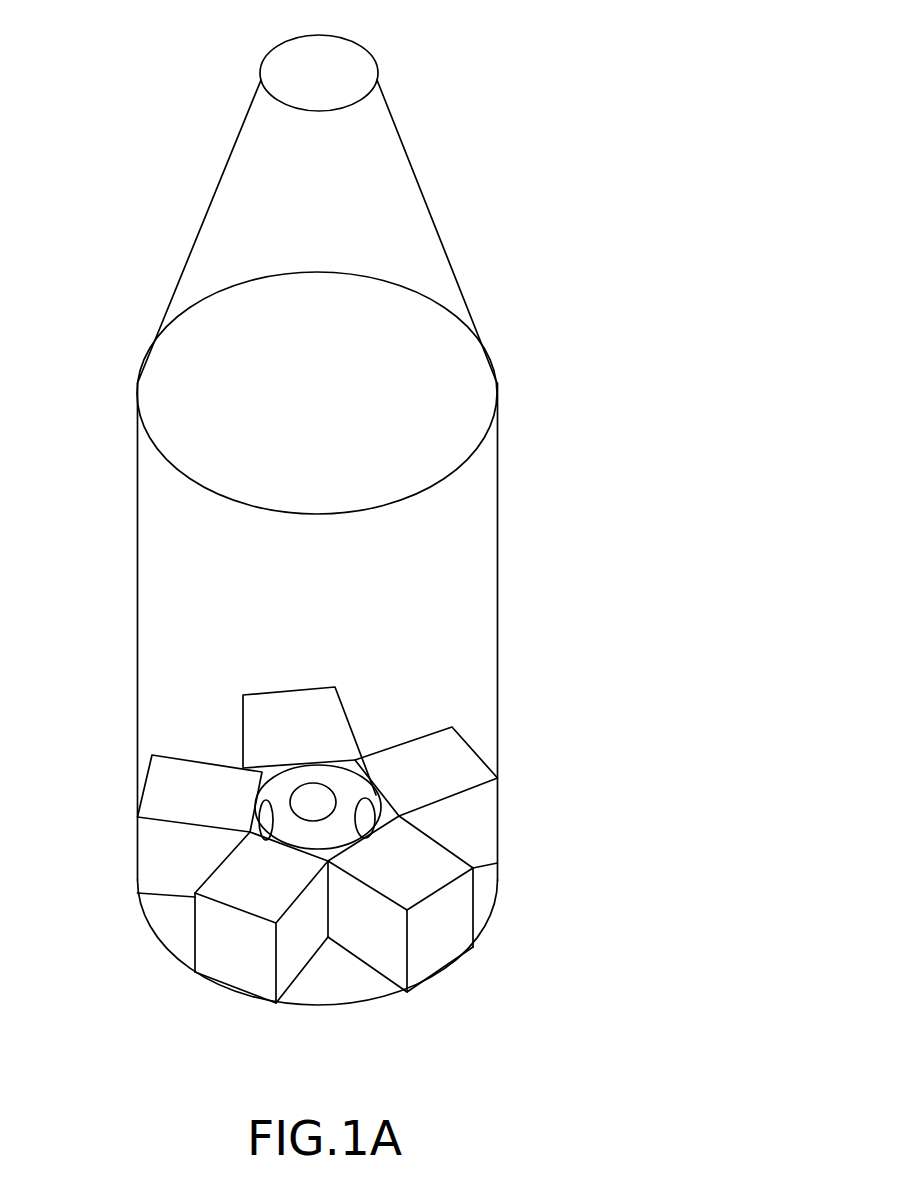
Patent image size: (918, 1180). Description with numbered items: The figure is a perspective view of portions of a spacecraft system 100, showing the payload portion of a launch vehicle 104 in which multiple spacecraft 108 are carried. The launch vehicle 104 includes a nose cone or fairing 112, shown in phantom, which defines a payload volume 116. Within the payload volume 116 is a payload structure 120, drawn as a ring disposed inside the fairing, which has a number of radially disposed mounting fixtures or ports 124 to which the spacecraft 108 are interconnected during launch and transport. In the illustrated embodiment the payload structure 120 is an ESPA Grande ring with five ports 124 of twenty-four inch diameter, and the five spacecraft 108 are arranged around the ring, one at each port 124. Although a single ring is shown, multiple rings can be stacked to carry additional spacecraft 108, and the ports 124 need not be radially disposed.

The spacecraft system 100 is at (568, 41).
The launch vehicle 104 is at (442, 192).
The nose cone or fairing 112 is at (209, 200).
The payload volume 116 is at (458, 593).
The spacecraft 108 is at (478, 820).
The payload structure 120 is at (366, 764).
The mounting fixtures or ports 124 is at (292, 798).